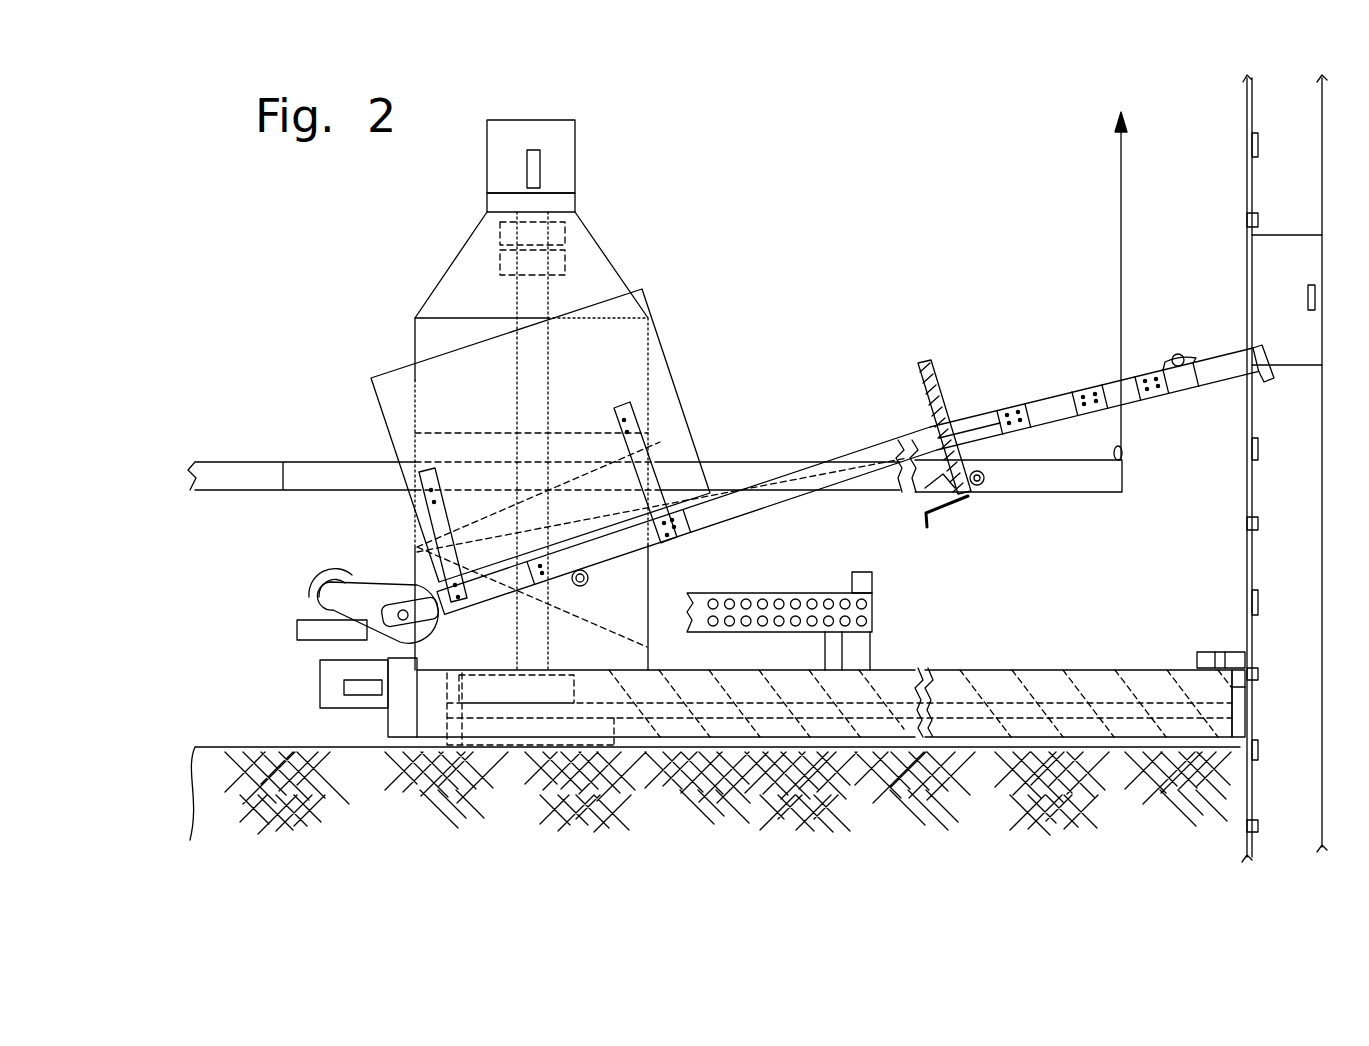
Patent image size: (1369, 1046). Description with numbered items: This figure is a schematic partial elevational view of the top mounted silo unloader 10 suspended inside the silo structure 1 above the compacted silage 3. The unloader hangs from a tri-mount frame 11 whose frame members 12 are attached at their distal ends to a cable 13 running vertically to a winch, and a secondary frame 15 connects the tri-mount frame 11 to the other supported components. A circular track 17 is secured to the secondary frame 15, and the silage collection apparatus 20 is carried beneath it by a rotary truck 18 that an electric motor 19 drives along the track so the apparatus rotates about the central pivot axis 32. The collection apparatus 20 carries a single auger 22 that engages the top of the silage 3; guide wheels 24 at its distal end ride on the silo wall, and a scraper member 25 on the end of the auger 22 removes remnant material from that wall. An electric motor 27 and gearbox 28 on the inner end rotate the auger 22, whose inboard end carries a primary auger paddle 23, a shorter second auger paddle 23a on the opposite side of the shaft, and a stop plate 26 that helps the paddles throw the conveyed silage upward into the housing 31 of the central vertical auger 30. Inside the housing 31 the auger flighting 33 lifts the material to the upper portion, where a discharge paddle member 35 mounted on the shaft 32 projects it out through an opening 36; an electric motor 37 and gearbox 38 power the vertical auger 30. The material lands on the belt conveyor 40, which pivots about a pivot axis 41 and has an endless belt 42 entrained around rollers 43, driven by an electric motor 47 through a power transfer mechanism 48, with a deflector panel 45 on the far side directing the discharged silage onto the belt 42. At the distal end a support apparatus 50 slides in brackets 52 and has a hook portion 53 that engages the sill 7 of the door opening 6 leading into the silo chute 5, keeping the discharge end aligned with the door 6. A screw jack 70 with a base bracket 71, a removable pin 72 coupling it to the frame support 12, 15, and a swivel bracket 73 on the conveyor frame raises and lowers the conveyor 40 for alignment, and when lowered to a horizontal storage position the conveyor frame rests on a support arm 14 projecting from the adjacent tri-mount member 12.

The silo structure 1 is at (1244, 78).
The compacted silage 3 is at (240, 775).
The silo chute 5 is at (1320, 190).
The door 6 is at (1268, 278).
The sill 7 is at (1266, 375).
The silo unloader 10 is at (720, 282).
The tri-mount frame 11 is at (265, 462).
The frame members 12 is at (1043, 494).
The cable 13 is at (1118, 190).
The support arm 14 is at (895, 502).
The secondary frame 15 is at (875, 578).
The circular track 17 is at (648, 650).
The rotary truck 18 is at (875, 648).
The electric motor 19 is at (825, 655).
The silage collection apparatus 20 is at (1086, 642).
The auger 22 is at (1000, 703).
The auger paddle 23 is at (456, 680).
The second auger paddle 23a is at (556, 636).
The guide wheels 24 is at (1237, 652).
The scraper member 25 is at (1235, 695).
The stop plate 26 is at (486, 627).
The electric motor 27 is at (335, 680).
The gearbox 28 is at (392, 725).
The central vertical auger 30 is at (400, 295).
The housing 31 is at (525, 430).
The central shaft 32 is at (525, 428).
The auger flighting 33 is at (652, 585).
The discharge paddle member 35 is at (643, 385).
The opening 36 is at (645, 428).
The electric motor 37 is at (565, 120).
The gearbox 38 is at (570, 205).
The belt conveyor 40 is at (882, 372).
The pivot axis 41 is at (575, 572).
The endless belt 42 is at (923, 358).
The rollers 43 is at (1160, 356).
The deflector panel 45 is at (700, 468).
The electric motor 47 is at (312, 598).
The power transfer mechanism 48 is at (367, 622).
The support apparatus 50 is at (1220, 392).
The brackets 52 is at (1075, 385).
The hook portion 53 is at (1268, 345).
The screw jack 70 is at (930, 392).
The base bracket 71 is at (940, 492).
The removable pin 72 is at (980, 487).
The swivel bracket 73 is at (895, 442).